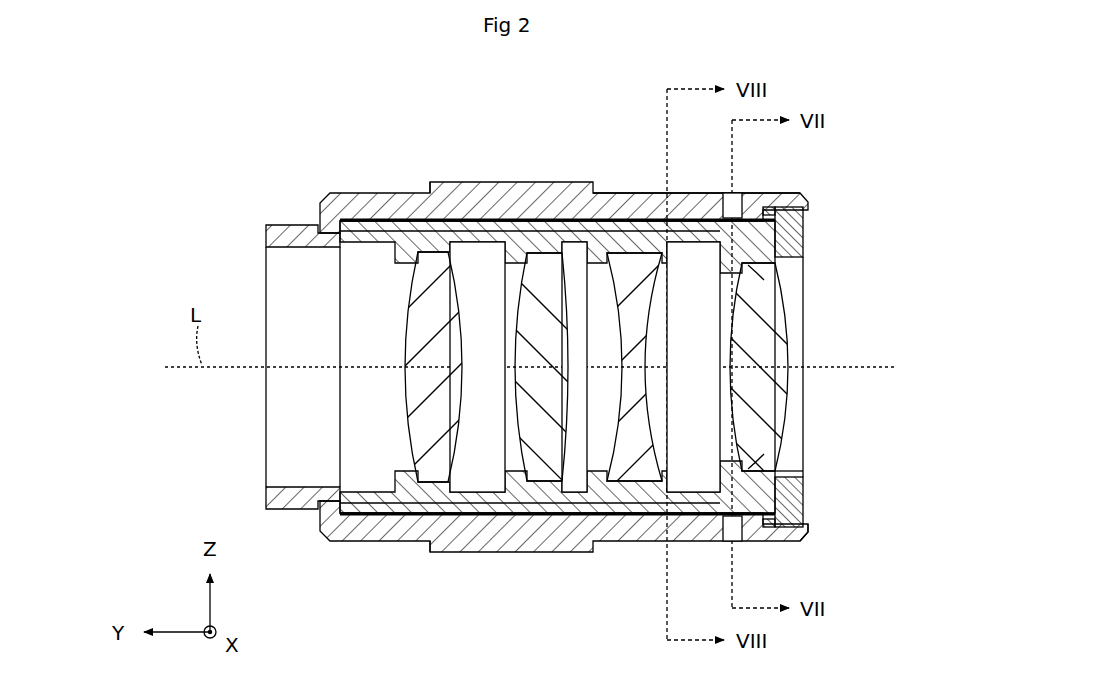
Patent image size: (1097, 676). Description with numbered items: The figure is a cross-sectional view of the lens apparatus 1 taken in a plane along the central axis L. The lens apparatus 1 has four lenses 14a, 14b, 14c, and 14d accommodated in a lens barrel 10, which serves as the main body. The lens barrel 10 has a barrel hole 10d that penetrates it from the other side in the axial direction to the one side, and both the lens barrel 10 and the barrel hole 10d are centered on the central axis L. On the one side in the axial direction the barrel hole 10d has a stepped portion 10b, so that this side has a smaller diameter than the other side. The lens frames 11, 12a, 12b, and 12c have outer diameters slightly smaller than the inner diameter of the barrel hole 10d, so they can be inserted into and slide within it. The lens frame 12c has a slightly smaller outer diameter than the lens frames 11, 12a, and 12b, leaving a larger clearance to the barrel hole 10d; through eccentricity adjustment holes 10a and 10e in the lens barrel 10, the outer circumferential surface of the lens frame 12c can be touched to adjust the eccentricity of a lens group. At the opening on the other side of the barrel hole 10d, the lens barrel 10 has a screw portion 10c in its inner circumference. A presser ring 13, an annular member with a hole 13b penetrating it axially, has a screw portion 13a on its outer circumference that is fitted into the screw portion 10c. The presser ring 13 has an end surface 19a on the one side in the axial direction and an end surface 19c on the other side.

The lens apparatus 1 is at (318, 113).
The lens barrel 10 is at (472, 186).
The eccentricity adjustment hole 10a is at (730, 190).
The stepped portion 10b is at (357, 236).
The screw portion 10c is at (800, 507).
The barrel hole 10d is at (503, 212).
The eccentricity adjustment hole 10e is at (735, 543).
The lens frame 11 is at (403, 232).
The lens frame 12a is at (542, 236).
The lens frame 12b is at (624, 236).
The lens frame 12c is at (748, 236).
The presser ring 13 is at (797, 240).
The screw portion 13a is at (795, 527).
The hole 13b is at (797, 462).
The lens 14a is at (433, 460).
The lens 14b is at (545, 463).
The lens 14c is at (633, 467).
The lens 14d is at (780, 395).
The end surface 19a is at (778, 276).
The end surface 19c is at (808, 218).